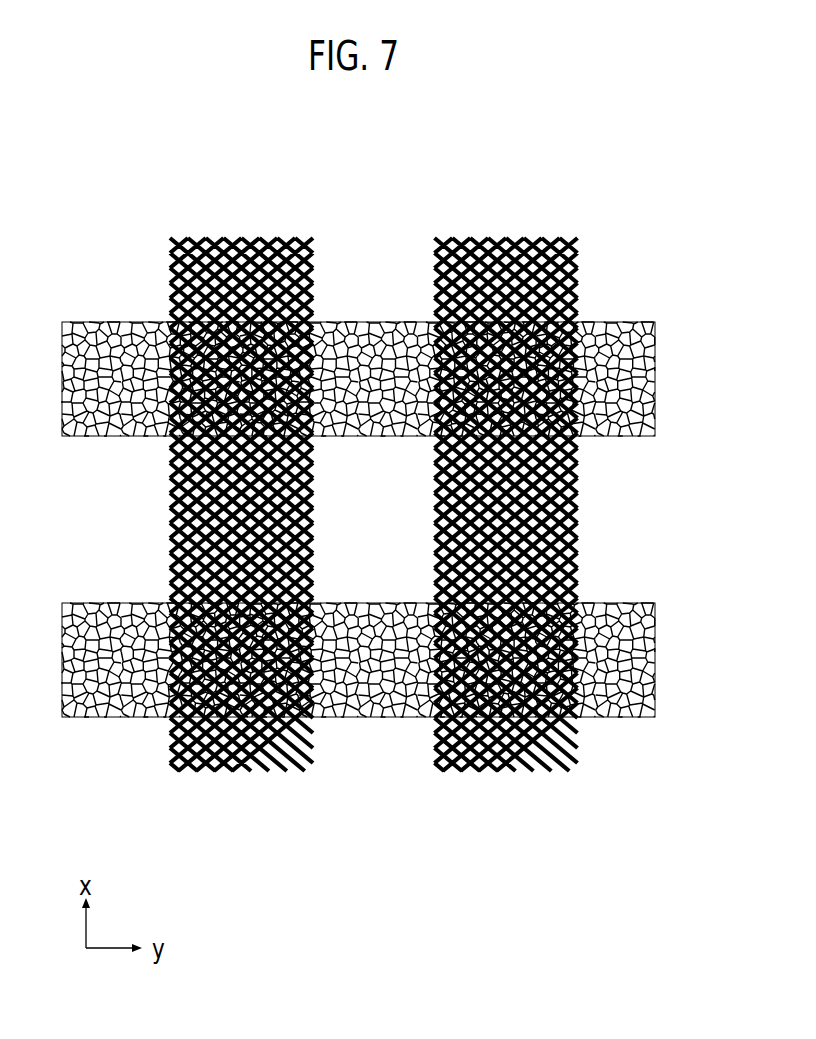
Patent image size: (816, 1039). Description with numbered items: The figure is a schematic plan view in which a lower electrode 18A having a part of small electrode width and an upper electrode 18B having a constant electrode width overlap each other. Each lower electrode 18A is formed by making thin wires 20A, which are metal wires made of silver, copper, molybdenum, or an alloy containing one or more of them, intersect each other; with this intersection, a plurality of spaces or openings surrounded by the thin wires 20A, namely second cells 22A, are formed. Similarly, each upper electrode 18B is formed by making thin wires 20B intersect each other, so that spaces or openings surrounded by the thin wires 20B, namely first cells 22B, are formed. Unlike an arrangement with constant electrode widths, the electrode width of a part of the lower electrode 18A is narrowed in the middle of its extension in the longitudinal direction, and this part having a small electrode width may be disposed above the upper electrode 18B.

The lower electrode 18A is at (401, 471).
The thin wires 20A is at (374, 477).
The second cells 22A is at (262, 250).
The upper electrode 18B is at (392, 552).
The thin wires 20B is at (392, 547).
The first cells 22B is at (343, 420).